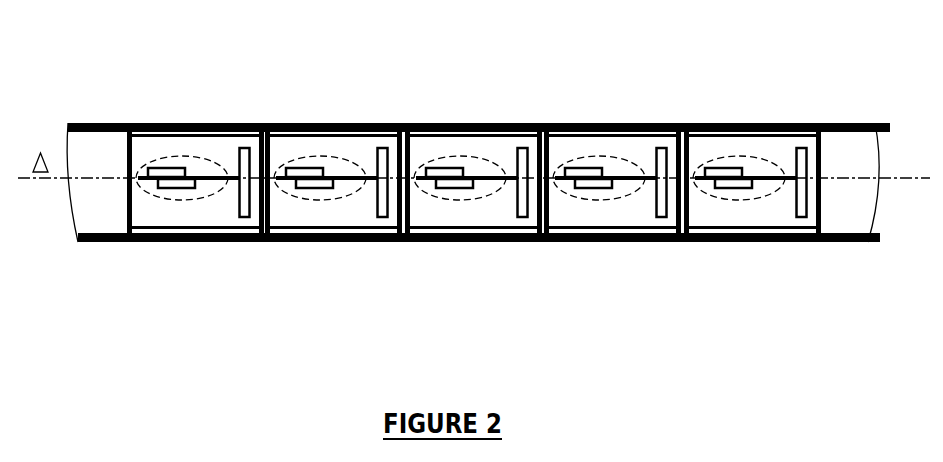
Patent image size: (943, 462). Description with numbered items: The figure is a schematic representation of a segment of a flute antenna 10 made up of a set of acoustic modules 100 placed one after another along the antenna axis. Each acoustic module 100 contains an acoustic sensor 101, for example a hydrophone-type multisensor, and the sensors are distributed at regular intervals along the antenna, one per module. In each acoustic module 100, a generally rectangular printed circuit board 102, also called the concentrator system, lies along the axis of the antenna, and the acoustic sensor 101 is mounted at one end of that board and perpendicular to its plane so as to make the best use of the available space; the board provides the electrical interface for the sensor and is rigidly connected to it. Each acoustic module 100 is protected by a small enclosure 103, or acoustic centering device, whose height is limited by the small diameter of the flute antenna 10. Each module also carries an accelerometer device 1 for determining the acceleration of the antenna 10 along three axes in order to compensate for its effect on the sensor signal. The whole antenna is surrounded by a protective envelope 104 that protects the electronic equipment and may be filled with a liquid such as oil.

The accelerometer device 1 is at (147, 158).
The flute antenna 10 is at (108, 245).
The acoustic module 100 is at (198, 106).
The acoustic sensor 101 is at (243, 147).
The printed circuit board 102 is at (203, 177).
The enclosure 103 is at (193, 229).
The protective envelope 104 is at (840, 243).